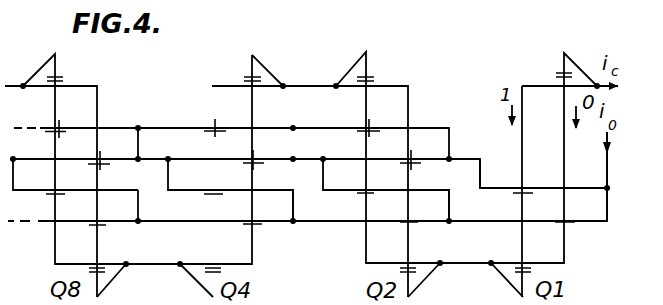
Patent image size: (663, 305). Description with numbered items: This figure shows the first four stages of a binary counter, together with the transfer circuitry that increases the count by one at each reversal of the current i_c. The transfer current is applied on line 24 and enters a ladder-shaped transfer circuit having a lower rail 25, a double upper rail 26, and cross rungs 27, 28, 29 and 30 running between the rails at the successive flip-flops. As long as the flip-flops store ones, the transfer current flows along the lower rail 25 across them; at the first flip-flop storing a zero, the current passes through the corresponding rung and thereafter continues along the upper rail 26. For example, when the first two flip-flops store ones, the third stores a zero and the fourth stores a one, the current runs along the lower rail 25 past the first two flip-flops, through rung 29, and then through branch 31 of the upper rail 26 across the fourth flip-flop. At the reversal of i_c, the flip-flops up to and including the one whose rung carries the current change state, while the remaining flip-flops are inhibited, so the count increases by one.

The line 24 is at (604, 171).
The lower rail 25 is at (325, 223).
The double upper rail 26 is at (191, 157).
The cross rung 27 is at (495, 186).
The cross rung 28 is at (452, 203).
The cross rung 29 is at (297, 203).
The cross rung 30 is at (140, 203).
The branch 31 is at (118, 157).